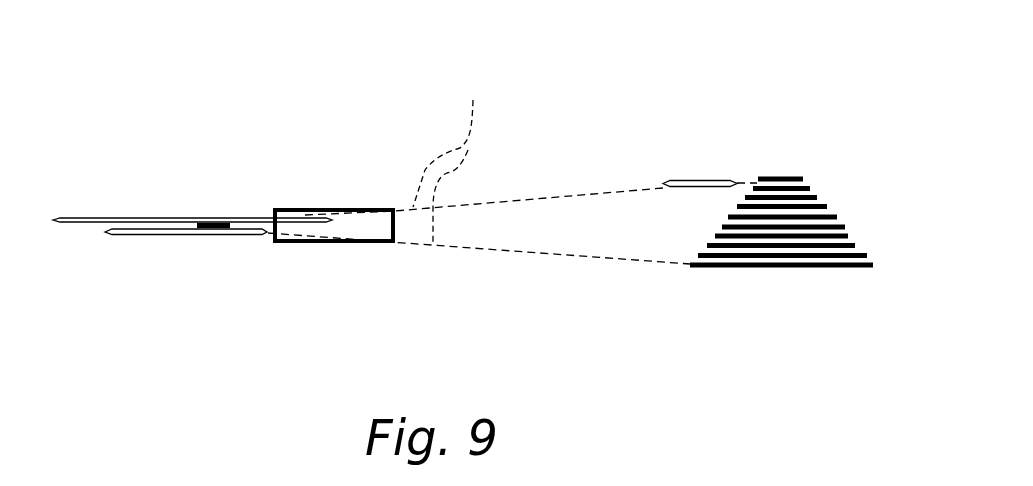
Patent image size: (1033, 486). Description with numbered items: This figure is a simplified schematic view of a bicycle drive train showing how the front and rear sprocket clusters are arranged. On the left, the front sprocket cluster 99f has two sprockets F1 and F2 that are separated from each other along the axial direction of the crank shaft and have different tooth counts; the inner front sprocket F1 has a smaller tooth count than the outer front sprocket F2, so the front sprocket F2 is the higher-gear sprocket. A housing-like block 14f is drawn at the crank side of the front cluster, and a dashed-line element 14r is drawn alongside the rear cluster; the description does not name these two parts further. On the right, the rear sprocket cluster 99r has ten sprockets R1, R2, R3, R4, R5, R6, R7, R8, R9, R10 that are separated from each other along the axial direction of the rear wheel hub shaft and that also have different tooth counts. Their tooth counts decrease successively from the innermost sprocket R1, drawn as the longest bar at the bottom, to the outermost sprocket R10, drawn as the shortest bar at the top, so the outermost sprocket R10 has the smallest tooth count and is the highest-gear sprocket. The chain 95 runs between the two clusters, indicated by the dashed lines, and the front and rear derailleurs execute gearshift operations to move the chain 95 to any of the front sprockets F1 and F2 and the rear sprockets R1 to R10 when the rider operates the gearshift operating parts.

The inner front sprocket F1 is at (183, 235).
The outer front sprocket F2 is at (125, 216).
The front sprocket cluster 99f is at (236, 168).
The front housing 14f is at (337, 208).
The chain 95 is at (449, 157).
The rear antenna element / housing 14r is at (690, 182).
The rear sprocket cluster 99r is at (786, 123).
The innermost rear sprocket R1 is at (690, 266).
The rear sprocket R2 is at (698, 257).
The rear sprocket R3 is at (707, 247).
The rear sprocket R4 is at (715, 237).
The rear sprocket R5 is at (722, 227).
The rear sprocket R6 is at (837, 217).
The rear sprocket R7 is at (827, 207).
The rear sprocket R8 is at (817, 197).
The rear sprocket R9 is at (810, 188).
The outermost rear sprocket R10 is at (803, 179).